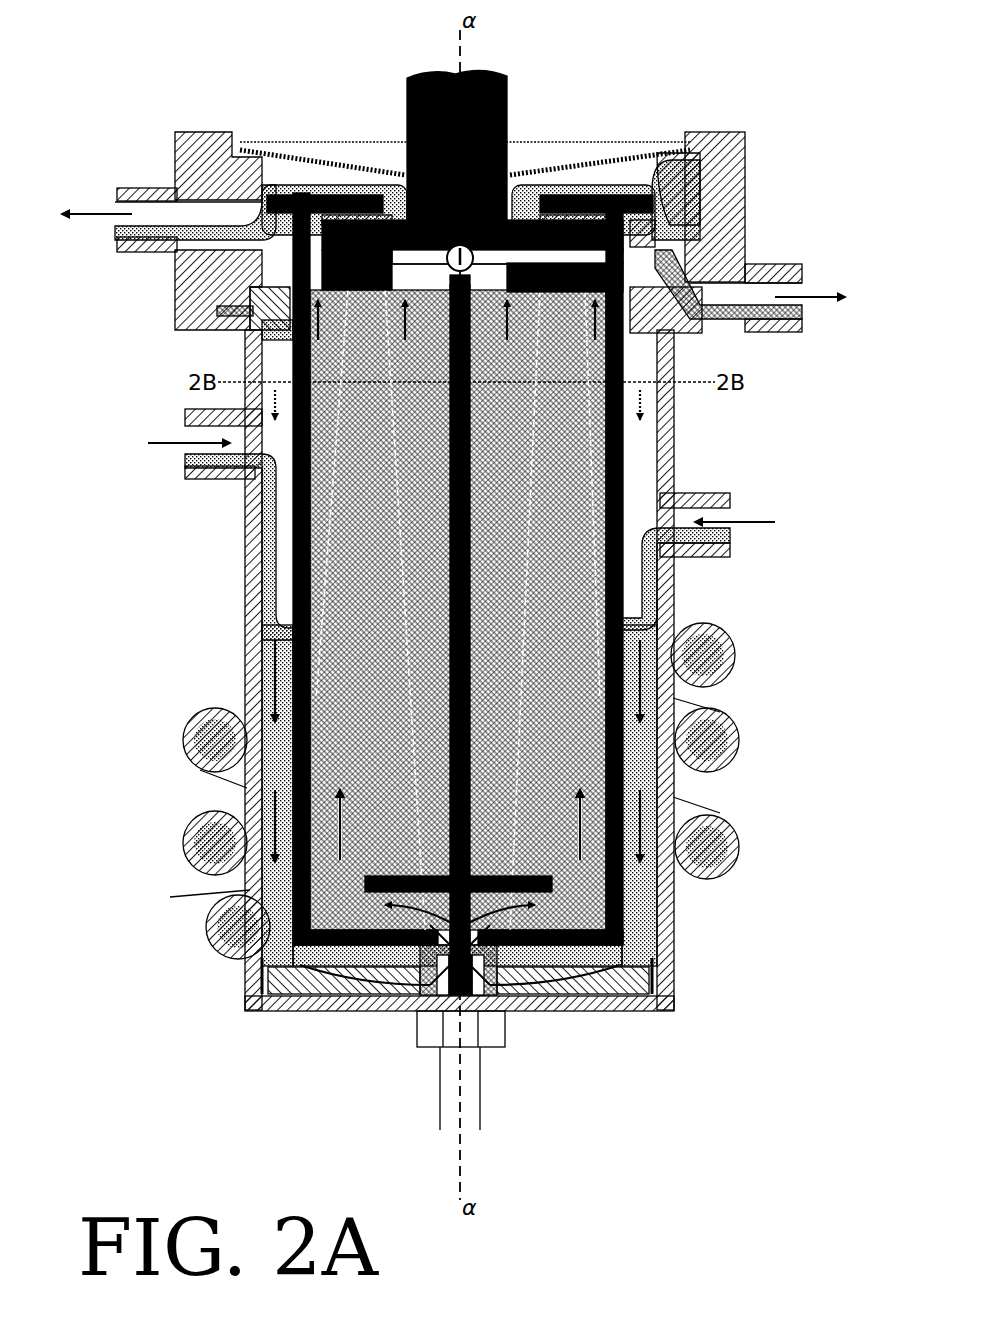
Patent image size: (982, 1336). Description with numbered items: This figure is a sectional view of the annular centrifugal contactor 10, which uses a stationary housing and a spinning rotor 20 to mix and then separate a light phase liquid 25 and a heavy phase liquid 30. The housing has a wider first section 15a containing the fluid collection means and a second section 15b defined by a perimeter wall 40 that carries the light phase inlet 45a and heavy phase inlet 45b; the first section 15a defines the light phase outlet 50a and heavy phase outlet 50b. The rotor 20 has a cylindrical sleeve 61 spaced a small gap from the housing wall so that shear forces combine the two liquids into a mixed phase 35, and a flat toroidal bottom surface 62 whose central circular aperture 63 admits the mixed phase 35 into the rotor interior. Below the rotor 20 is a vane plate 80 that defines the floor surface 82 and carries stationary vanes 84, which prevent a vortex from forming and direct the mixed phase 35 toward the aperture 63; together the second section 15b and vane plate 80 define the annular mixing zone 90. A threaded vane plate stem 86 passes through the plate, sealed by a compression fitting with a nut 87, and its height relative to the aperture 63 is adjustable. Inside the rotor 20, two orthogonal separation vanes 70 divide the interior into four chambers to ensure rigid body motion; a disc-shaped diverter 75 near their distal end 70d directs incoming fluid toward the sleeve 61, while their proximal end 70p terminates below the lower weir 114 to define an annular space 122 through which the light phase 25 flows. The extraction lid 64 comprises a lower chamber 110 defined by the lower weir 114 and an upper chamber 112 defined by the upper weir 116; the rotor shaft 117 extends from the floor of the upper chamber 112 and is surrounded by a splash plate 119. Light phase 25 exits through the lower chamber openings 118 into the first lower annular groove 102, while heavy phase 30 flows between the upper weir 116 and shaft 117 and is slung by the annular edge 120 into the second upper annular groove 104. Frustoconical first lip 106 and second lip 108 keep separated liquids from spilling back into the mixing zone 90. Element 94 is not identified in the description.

The annular centrifugal contactor 10 is at (150, 100).
The first section 15a is at (250, 322).
The second section 15b is at (262, 592).
The rotor 20 is at (305, 605).
The light phase liquid 25 is at (660, 592).
The heavy phase liquid 30 is at (275, 512).
The mixed phase 35 is at (330, 770).
The perimeter wall 40 is at (660, 605).
The light phase inlet 45a is at (690, 497).
The heavy phase inlet 45b is at (245, 415).
The light phase outlet 50a is at (800, 270).
The heavy phase outlet 50b is at (182, 194).
The rotor sleeve 61 is at (625, 752).
The bottom surface 62 is at (375, 948).
The circular aperture 63 is at (490, 1005).
The extraction lid 64 is at (470, 250).
The separation vanes 70 is at (452, 550).
The proximal end 70p is at (455, 288).
The distal end 70d is at (417, 873).
The diverter 75 is at (370, 884).
The vane plate 80 is at (280, 1015).
The floor surface 82 is at (300, 966).
The vanes 84 is at (530, 1010).
The vane plate stem 86 is at (440, 1085).
The nut 87 is at (492, 1035).
The annular mixing zone 90 is at (178, 795).
The coil 94 is at (690, 840).
The first lower annular groove 102 is at (245, 295).
The second upper annular groove 104 is at (700, 190).
The first lip 106 is at (690, 320).
The second lip 108 is at (705, 210).
The lower chamber 110 is at (555, 175).
The upper chamber 112 is at (320, 195).
The lower weir 114 is at (530, 240).
The upper weir 116 is at (350, 228).
The rotor shaft 117 is at (458, 70).
The lower chamber openings 118 is at (520, 250).
The splash plate 119 is at (382, 178).
The annular edge 120 is at (560, 165).
The annular space 122 is at (412, 190).